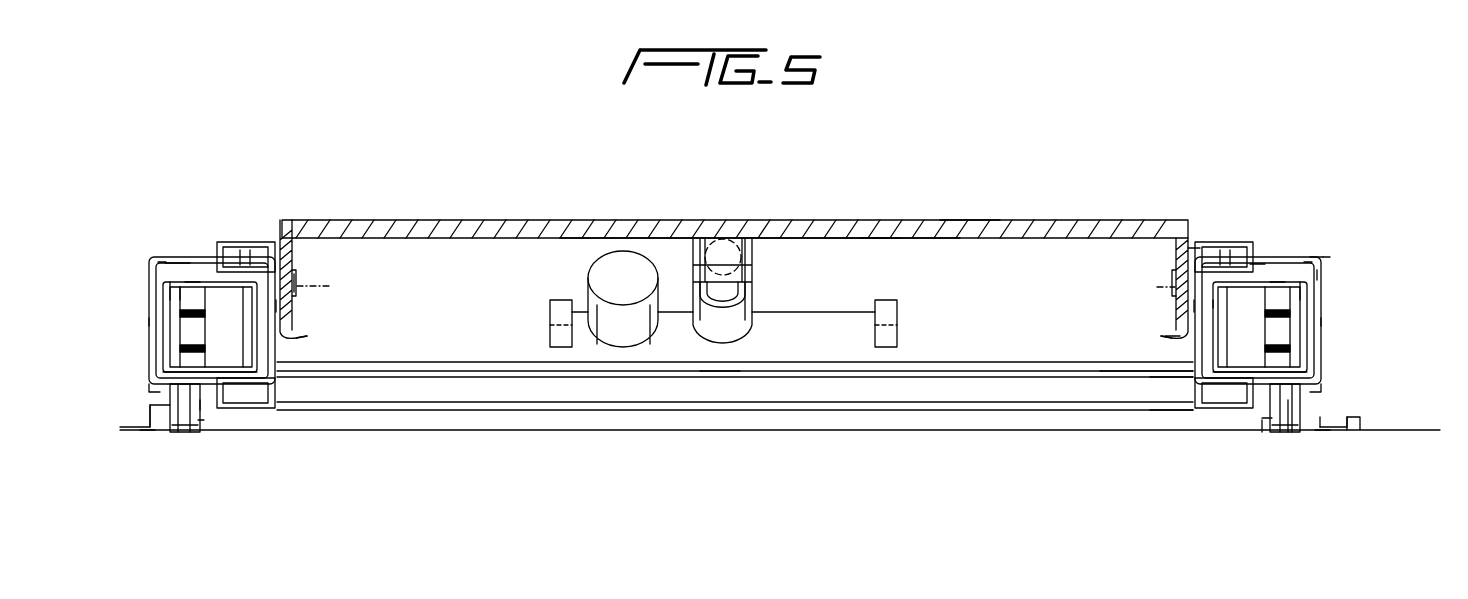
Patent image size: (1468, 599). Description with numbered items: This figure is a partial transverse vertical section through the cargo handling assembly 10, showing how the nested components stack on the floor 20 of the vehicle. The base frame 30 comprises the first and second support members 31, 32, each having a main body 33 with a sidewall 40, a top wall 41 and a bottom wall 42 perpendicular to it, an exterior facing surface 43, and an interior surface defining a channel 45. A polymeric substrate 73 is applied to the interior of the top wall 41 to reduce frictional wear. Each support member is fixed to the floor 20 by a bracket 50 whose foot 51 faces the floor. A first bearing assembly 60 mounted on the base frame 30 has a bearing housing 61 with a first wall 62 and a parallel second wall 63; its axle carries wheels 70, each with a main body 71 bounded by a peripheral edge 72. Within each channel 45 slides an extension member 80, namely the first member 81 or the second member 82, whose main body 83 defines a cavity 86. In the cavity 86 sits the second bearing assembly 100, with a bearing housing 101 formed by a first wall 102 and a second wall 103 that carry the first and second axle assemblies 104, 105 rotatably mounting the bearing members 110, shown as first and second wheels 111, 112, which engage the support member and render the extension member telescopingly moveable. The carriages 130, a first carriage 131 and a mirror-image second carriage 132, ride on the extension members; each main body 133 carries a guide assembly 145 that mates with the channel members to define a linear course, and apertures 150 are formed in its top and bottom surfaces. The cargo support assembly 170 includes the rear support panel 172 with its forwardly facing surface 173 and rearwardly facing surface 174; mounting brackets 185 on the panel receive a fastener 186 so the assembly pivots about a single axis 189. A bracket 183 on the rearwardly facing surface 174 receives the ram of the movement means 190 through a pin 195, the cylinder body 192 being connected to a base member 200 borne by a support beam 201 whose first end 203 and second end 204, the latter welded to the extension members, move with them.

The cargo handling assembly 10 is at (1283, 208).
The floor 20 is at (1360, 429).
The base frame 30 is at (153, 252).
The first support member 31 is at (177, 263).
The second support member 32 is at (1323, 253).
The main body 33 is at (150, 322).
The sidewall 40 is at (150, 292).
The top wall 41 is at (189, 285).
The bottom wall 42 is at (154, 390).
The exterior facing surface 43 is at (1328, 275).
The channel 45 is at (161, 267).
The bracket 50 is at (147, 432).
The foot 51 is at (1333, 430).
The first bearing assembly 60 is at (178, 436).
The bearing housing 61 is at (200, 432).
The first wall 62 is at (1293, 434).
The second wall 63 is at (1267, 438).
The wheels 70 is at (184, 440).
The main body 71 is at (152, 405).
The peripheral edge 72 is at (200, 405).
The polymeric substrate 73 is at (1257, 262).
The extension members 80 is at (290, 336).
The first member 81 is at (297, 278).
The second member 82 is at (1197, 252).
The main body 83 is at (292, 304).
The cavity 86 is at (1227, 303).
The second bearing assembly 100 is at (1253, 315).
The bearing housing 101 is at (1185, 378).
The first wall 102 is at (1315, 350).
The second wall 103 is at (1180, 333).
The first axle assembly 104 is at (228, 298).
The second axle assembly 105 is at (272, 352).
The bearing members 110 is at (192, 280).
The first wheel 111 is at (192, 295).
The second wheel 112 is at (185, 350).
The carriages 130 is at (237, 238).
The first carriage 131 is at (264, 250).
The second carriage 132 is at (1200, 240).
The main body 133 is at (280, 384).
The guide assembly 145 is at (257, 403).
The apertures 150 is at (1178, 420).
The cargo support assembly 170 is at (688, 216).
The rear support panel 172 is at (1003, 228).
The forwardly facing surface 173 is at (973, 220).
The rearwardly facing surface 174 is at (887, 238).
The bracket 183 is at (745, 240).
The mounting brackets 185 is at (307, 240).
The fastener 186 is at (306, 283).
The axis 189 is at (330, 292).
The movement means 190 is at (760, 285).
The cylinder body 192 is at (750, 335).
The pin 195 is at (752, 260).
The base member 200 is at (902, 328).
The support beam 201 is at (720, 372).
The first end 203 is at (300, 372).
The second end 204 is at (1175, 375).